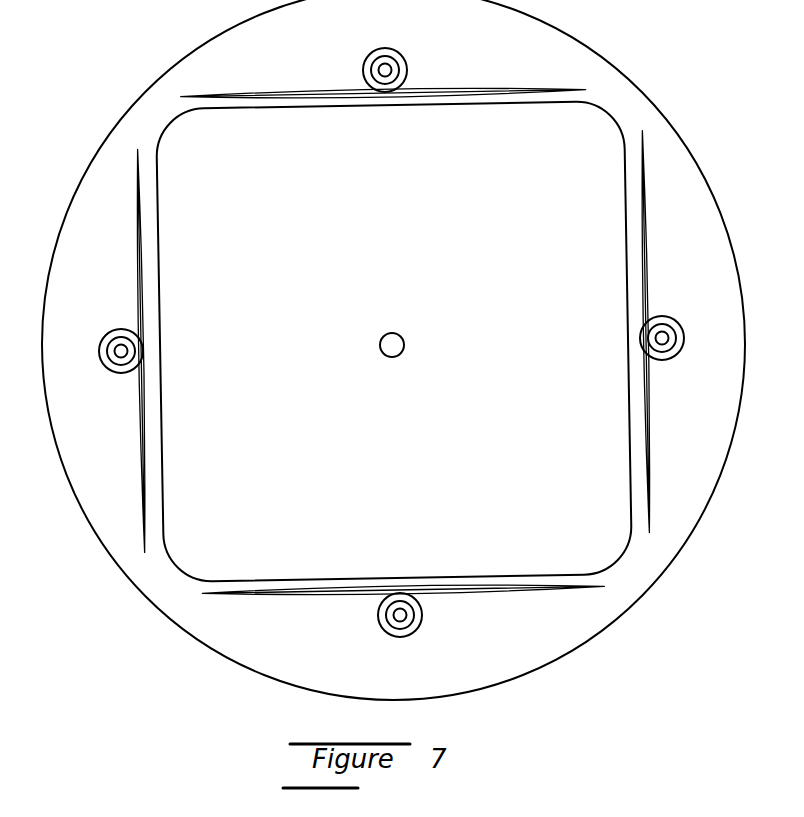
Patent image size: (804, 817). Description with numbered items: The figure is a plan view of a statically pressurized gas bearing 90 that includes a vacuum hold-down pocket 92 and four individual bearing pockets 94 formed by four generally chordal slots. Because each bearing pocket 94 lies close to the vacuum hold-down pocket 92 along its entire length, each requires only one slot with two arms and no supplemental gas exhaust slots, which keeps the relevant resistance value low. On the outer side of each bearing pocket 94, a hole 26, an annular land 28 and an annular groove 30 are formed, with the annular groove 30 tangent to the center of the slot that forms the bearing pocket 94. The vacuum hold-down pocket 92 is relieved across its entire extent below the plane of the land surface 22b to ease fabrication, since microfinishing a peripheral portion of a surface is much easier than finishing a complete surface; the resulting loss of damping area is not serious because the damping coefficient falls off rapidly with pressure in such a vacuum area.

The gas bearing 90 is at (665, 88).
The vacuum hold-down pocket 92 is at (462, 270).
The bearing pocket 94 is at (548, 88).
The hole 26 is at (366, 60).
The annular land 28 is at (385, 70).
The annular groove 30 is at (403, 68).
The land surface 22b is at (278, 657).